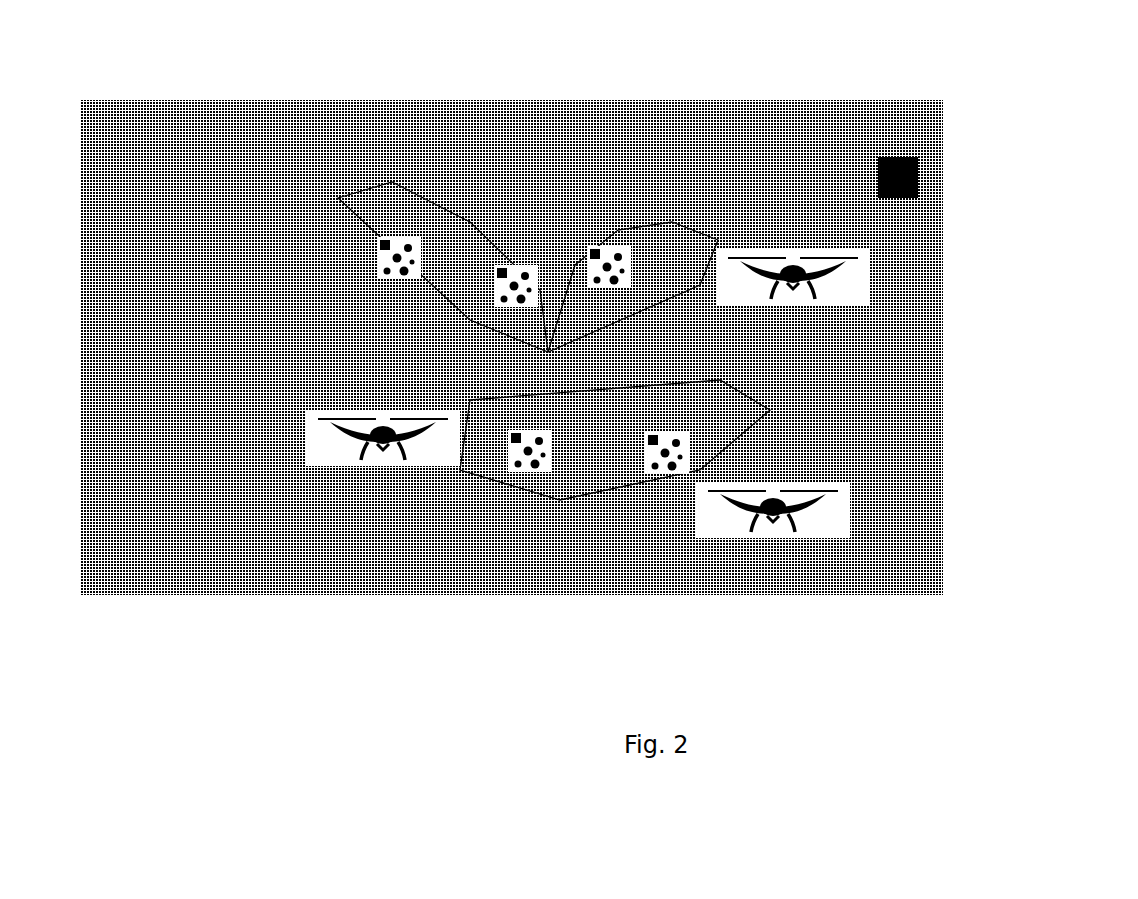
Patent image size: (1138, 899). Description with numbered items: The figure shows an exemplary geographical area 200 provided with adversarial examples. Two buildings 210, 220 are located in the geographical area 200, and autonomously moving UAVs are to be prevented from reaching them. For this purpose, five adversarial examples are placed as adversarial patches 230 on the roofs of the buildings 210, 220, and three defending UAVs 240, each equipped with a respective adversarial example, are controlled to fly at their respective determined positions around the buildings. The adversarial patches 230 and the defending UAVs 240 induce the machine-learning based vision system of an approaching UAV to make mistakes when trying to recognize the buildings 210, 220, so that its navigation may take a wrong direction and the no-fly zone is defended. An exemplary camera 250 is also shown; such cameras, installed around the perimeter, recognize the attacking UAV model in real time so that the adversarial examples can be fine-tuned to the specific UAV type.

The geographical area 200 is at (783, 92).
The building 210 is at (347, 210).
The building 220 is at (593, 518).
The adversarial patches 230 is at (549, 428).
The defending UAVs 240 is at (460, 413).
The camera 250 is at (922, 176).